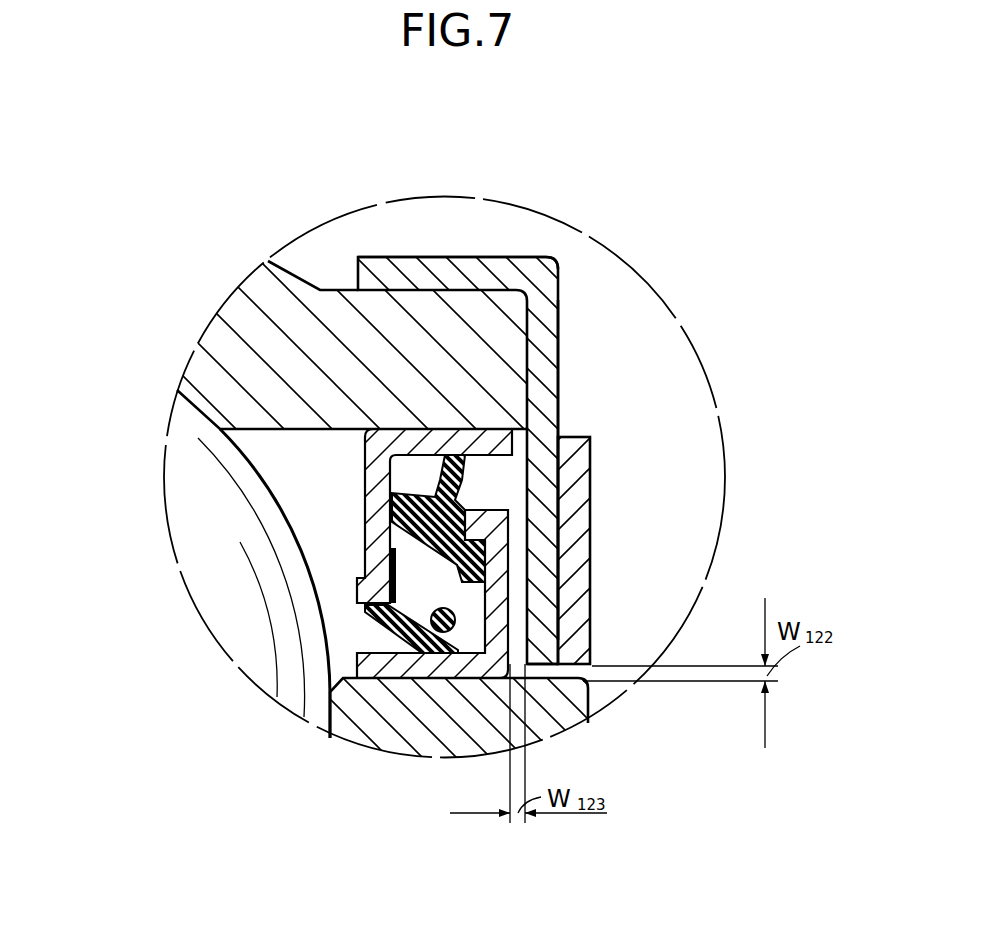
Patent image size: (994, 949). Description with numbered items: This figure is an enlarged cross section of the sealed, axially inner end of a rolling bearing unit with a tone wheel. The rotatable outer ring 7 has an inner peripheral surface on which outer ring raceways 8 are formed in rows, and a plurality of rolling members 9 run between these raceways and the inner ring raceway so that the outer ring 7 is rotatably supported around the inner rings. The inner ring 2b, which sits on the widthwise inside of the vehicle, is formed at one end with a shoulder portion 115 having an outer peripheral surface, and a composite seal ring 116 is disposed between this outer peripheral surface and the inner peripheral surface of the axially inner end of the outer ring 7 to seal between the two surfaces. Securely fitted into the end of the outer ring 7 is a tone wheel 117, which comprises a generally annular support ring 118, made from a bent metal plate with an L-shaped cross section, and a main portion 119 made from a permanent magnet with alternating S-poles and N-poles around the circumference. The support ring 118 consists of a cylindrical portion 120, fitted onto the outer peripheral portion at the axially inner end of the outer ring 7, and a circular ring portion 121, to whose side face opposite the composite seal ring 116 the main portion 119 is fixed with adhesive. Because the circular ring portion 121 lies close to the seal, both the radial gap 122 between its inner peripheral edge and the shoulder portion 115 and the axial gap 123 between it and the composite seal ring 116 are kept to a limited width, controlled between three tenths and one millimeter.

The outer ring 7 is at (307, 293).
The outer ring raceway 8 is at (192, 406).
The rolling member 9 is at (207, 590).
The inner ring 2b is at (456, 751).
The shoulder portion 115 is at (414, 690).
The composite seal ring 116 is at (351, 507).
The tone wheel 117 is at (586, 405).
The support ring 118 is at (579, 405).
The main portion 119 is at (590, 470).
The cylindrical portion 120 is at (452, 270).
The circular ring portion 121 is at (557, 383).
The radial gap 122 is at (530, 664).
The axial gap 123 is at (512, 537).